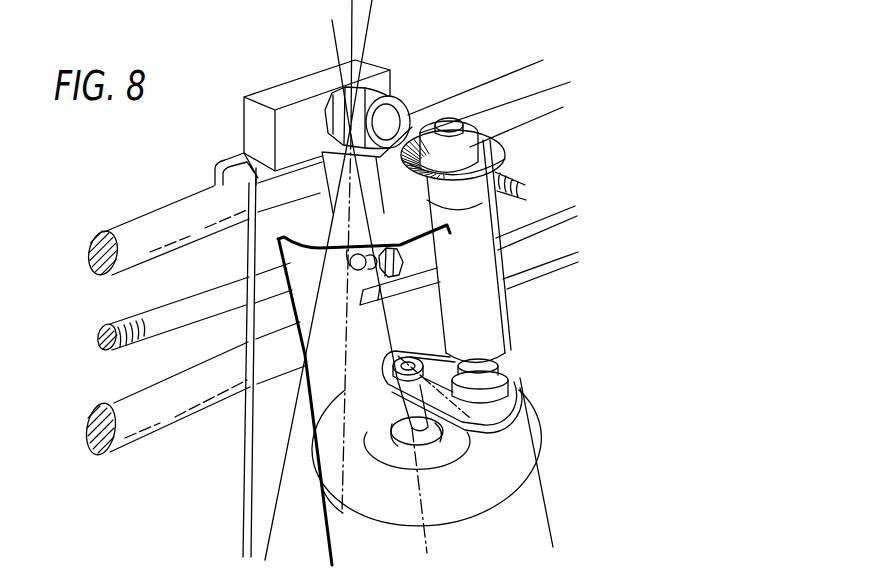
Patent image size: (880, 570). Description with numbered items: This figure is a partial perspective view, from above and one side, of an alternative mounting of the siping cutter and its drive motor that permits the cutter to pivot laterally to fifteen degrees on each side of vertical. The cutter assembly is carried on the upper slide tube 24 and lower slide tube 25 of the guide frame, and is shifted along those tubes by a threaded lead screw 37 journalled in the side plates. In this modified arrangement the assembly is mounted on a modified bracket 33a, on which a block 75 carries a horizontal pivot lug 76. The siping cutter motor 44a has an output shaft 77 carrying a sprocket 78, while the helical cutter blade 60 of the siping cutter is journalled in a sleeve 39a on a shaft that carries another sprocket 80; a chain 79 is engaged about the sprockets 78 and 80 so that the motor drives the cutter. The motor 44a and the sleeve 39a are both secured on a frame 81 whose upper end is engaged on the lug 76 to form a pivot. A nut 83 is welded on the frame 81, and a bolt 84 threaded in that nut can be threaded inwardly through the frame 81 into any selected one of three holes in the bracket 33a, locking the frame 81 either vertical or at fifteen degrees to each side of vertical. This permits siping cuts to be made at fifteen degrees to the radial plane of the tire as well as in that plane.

The upper slide tube 24 is at (147, 227).
The lower slide tube 25 is at (118, 404).
The modified bracket 33a is at (262, 434).
The threaded lead screw 37 is at (122, 324).
The sleeve 39a is at (490, 318).
The siping cutter motor 44a is at (528, 445).
The helical cutter blade 60 is at (492, 153).
The block 75 is at (286, 93).
The horizontal pivot lug 76 is at (386, 118).
The output shaft 77 is at (422, 432).
The sprocket 78 is at (401, 364).
The chain 79 is at (527, 393).
The sprocket 80 is at (504, 385).
The frame 81 is at (304, 255).
The nut 83 is at (360, 266).
The bolt 84 is at (403, 258).